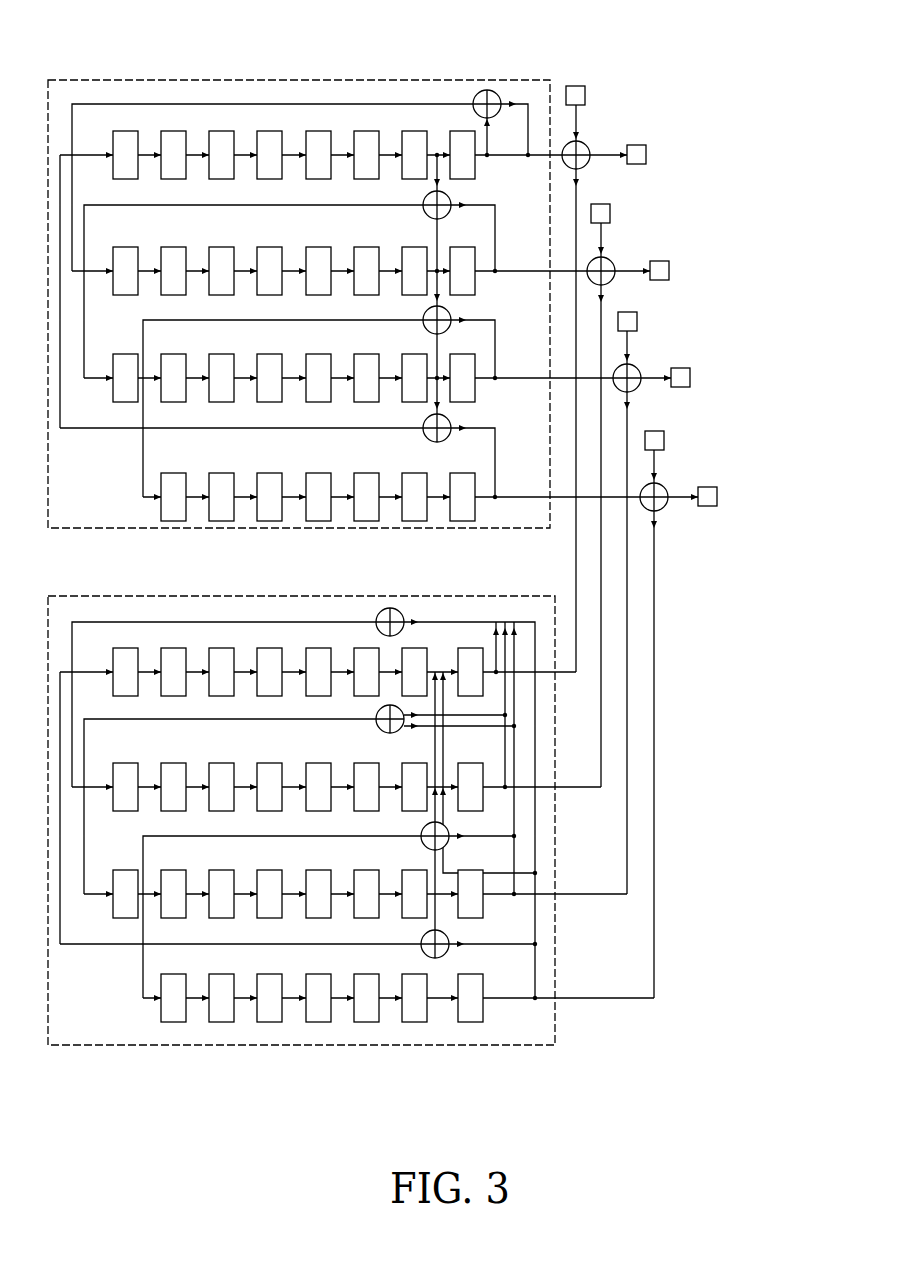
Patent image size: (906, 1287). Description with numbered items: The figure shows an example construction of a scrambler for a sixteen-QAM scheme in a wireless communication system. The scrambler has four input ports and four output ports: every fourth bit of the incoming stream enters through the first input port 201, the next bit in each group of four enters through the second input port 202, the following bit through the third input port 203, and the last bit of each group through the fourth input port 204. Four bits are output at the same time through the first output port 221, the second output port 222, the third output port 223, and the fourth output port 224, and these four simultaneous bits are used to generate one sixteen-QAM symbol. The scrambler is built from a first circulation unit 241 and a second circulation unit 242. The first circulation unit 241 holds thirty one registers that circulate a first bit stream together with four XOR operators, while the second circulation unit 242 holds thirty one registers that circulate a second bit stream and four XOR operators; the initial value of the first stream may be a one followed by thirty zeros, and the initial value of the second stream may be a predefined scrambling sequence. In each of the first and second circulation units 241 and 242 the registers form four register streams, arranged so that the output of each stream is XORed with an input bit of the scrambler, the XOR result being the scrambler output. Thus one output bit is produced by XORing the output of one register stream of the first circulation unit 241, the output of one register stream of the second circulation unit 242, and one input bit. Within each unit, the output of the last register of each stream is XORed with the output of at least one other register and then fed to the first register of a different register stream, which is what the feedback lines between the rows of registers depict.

The first circulation unit 241 is at (322, 72).
The second circulation unit 242 is at (324, 585).
The first input port 201 is at (596, 76).
The second input port 202 is at (611, 207).
The third input port 203 is at (637, 315).
The fourth input port 204 is at (664, 433).
The first output port 221 is at (655, 137).
The second output port 222 is at (669, 262).
The third output port 223 is at (689, 370).
The fourth output port 224 is at (722, 518).